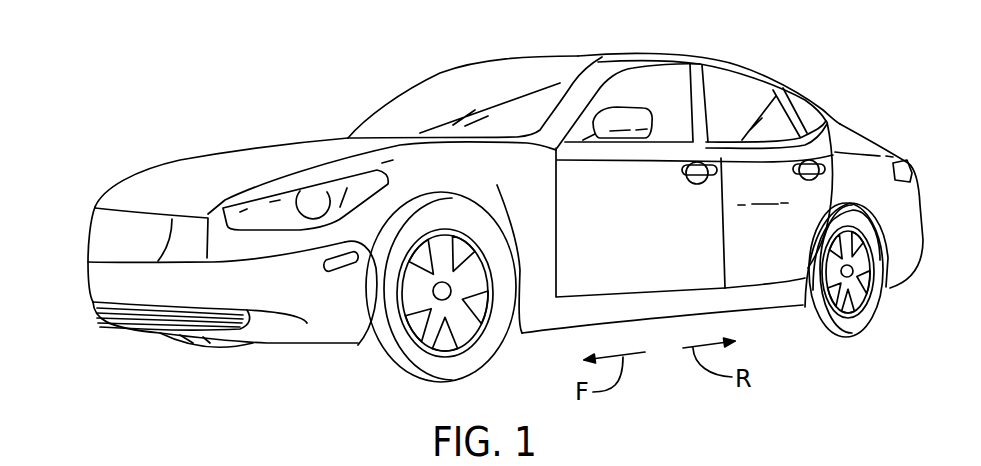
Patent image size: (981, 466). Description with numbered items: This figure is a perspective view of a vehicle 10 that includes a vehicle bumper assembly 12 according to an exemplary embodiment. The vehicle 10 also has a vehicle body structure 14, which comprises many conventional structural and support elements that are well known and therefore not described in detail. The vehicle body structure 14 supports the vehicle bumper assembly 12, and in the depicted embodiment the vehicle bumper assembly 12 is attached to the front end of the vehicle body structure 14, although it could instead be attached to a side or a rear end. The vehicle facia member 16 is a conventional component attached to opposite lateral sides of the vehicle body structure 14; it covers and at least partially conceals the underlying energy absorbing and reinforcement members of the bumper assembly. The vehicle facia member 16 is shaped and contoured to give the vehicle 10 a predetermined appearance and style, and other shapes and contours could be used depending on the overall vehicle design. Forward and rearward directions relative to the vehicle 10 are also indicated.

The vehicle 10 is at (797, 41).
The vehicle bumper assembly 12 is at (78, 276).
The vehicle body structure 14 is at (583, 52).
The vehicle facia member 16 is at (90, 290).